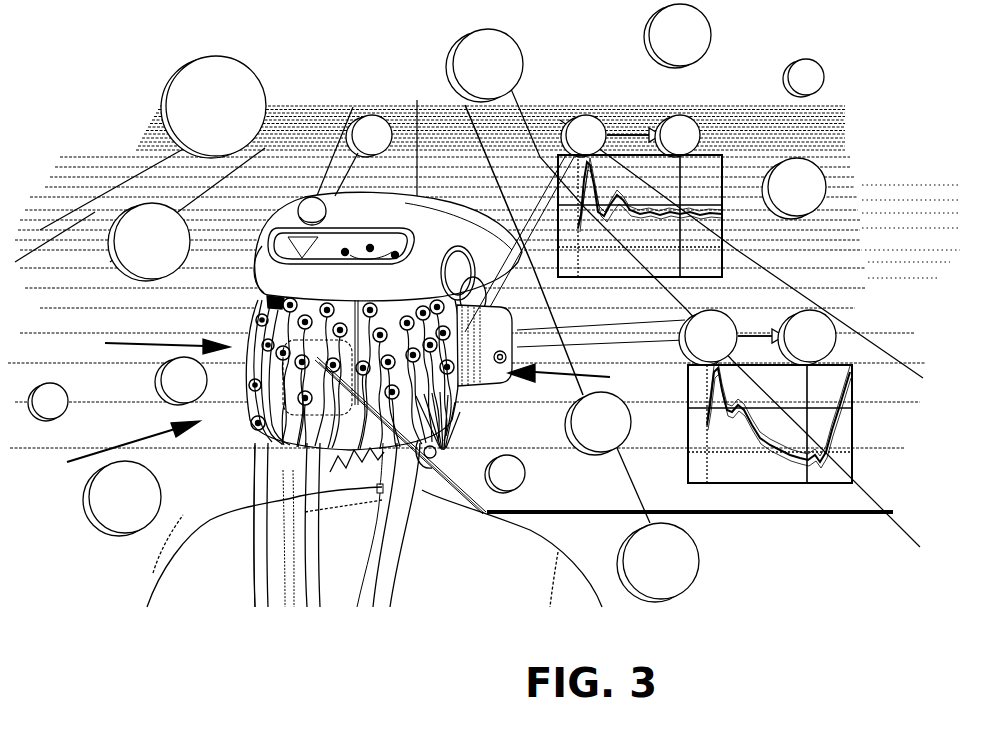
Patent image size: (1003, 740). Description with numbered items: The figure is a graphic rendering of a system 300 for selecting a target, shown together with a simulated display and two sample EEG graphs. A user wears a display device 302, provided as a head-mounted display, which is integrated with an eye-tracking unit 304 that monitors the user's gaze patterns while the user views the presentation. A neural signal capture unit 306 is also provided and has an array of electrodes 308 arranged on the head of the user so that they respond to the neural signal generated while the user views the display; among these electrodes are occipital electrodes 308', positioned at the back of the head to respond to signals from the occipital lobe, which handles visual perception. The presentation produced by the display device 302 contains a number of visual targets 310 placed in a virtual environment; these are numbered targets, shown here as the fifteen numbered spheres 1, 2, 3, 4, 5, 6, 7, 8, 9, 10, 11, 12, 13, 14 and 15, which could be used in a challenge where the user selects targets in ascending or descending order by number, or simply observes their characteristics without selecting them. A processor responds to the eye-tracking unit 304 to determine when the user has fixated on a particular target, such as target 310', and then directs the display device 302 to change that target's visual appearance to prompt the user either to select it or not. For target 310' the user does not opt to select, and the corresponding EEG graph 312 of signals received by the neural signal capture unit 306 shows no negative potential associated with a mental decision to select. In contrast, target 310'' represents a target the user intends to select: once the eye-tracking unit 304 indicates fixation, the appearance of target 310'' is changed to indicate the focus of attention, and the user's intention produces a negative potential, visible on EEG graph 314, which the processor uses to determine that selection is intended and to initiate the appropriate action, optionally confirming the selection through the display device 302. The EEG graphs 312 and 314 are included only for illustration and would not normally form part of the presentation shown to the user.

The virtual object 1 is at (803, 78).
The virtual object 2 is at (598, 423).
The virtual object 3 is at (181, 381).
The virtual object 4 is at (149, 242).
The virtual object 5 is at (363, 155).
The virtual object 6 is at (677, 36).
The virtual object 7 is at (630, 136).
The virtual object 8 is at (505, 474).
The virtual object 9 is at (122, 498).
The virtual object 10 is at (794, 188).
The virtual object 11 is at (48, 402).
The virtual object 12 is at (757, 337).
The virtual object 13 is at (484, 65).
The virtual object 14 is at (658, 525).
The virtual object 15 is at (213, 107).
The system for selecting a target 300 is at (109, 453).
The display device 302 is at (581, 378).
The eye-tracking unit 304 is at (467, 337).
The neural signal capture unit 306 is at (141, 343).
The electrodes 308 is at (430, 429).
The occipital electrodes 308' is at (294, 466).
The visual targets 310 is at (465, 264).
The unselected target 310' is at (609, 91).
The selected target 310'' is at (769, 283).
The EEG graph 312 is at (708, 155).
The EEG graph 314 is at (837, 363).